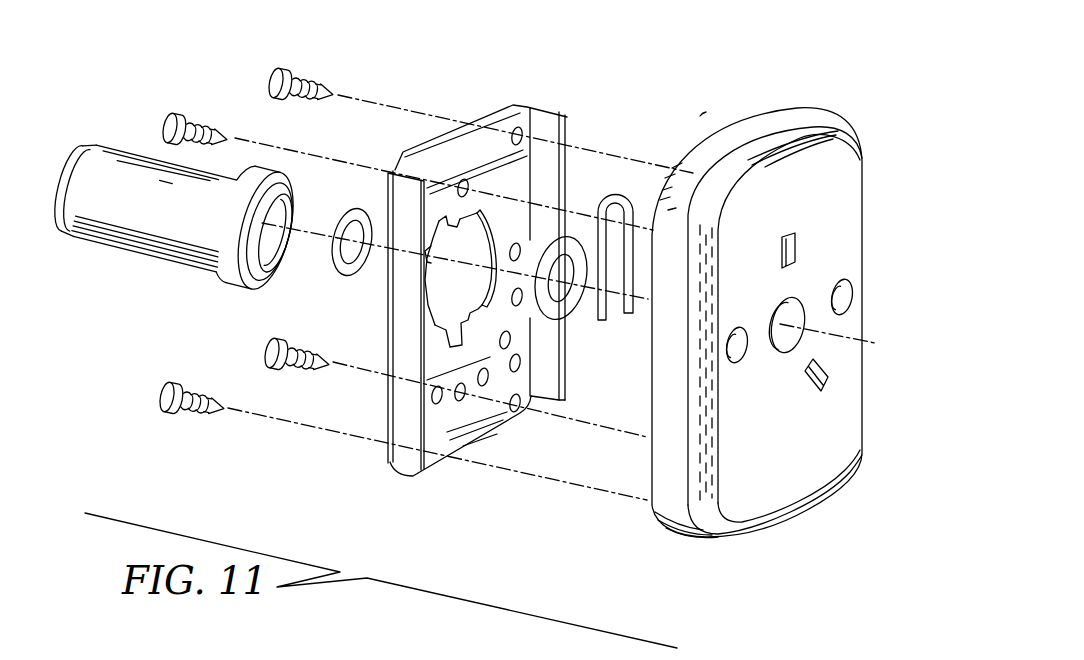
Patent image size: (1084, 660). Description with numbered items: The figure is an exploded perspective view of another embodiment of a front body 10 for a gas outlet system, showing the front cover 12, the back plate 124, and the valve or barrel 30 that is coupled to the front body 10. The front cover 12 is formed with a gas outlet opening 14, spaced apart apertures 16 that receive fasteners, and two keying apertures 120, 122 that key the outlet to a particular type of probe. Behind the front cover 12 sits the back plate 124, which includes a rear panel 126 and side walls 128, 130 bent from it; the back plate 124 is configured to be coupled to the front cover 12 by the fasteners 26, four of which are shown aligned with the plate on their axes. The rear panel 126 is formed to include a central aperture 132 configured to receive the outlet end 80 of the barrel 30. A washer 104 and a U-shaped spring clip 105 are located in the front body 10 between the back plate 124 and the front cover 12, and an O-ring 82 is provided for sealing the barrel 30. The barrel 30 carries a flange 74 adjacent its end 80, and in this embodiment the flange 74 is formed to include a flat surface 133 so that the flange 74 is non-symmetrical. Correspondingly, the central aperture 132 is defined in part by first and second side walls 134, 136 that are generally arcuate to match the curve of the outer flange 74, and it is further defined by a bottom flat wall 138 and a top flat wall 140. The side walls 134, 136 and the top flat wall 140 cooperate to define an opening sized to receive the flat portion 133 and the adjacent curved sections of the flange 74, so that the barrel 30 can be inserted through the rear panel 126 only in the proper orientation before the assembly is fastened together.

The front body 10 is at (710, 113).
The front cover 12 is at (845, 204).
The gas outlet opening 14 is at (781, 360).
The apertures 16 is at (845, 278).
The fasteners 26 is at (307, 93).
The barrel 30 is at (140, 227).
The flange 74 is at (290, 174).
The end of barrel 80 is at (207, 283).
The O-ring 82 is at (345, 270).
The washer 104 is at (568, 237).
The retaining clip 105 is at (634, 193).
The keying aperture 120 is at (788, 237).
The keying aperture 122 is at (809, 380).
The back plate 124 is at (531, 98).
The rear panel 126 is at (453, 150).
The side wall 128 is at (403, 423).
The side wall 130 is at (547, 377).
The central aperture 132 is at (452, 306).
The flat surface 133 is at (270, 167).
The first side wall 134 is at (430, 270).
The second side wall 136 is at (490, 247).
The bottom flat wall 138 is at (480, 305).
The top flat wall 140 is at (450, 223).